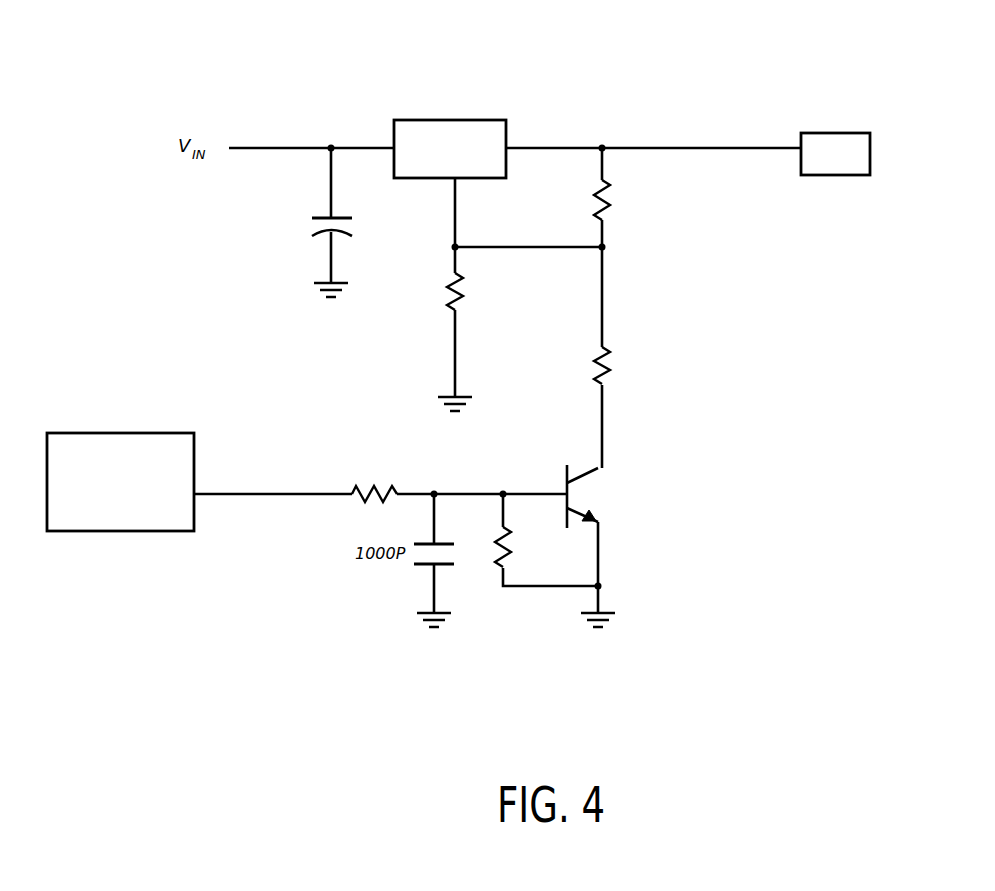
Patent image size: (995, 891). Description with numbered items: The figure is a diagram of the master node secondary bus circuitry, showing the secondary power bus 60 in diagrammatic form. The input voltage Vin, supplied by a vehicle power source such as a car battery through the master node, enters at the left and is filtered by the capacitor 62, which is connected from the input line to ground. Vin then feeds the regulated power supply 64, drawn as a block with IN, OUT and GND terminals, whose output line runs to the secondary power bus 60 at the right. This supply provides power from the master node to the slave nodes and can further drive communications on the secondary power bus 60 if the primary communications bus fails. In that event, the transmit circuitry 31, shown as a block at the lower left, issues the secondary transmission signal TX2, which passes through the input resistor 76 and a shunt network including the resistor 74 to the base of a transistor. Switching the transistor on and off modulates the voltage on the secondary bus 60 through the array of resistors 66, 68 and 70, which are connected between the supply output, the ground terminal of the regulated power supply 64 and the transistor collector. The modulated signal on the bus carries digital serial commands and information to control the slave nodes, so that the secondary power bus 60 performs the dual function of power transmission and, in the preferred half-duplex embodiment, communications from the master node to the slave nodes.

The transmit circuitry 31 is at (118, 532).
The secondary power bus 60 is at (727, 142).
The capacitor 62 is at (350, 229).
The regulated power supply 64 is at (443, 126).
The resistor 66 is at (604, 384).
The resistor 68 is at (604, 220).
The resistor 70 is at (457, 309).
The 10K resistor 74 is at (502, 566).
The 4.7K resistor 76 is at (396, 492).